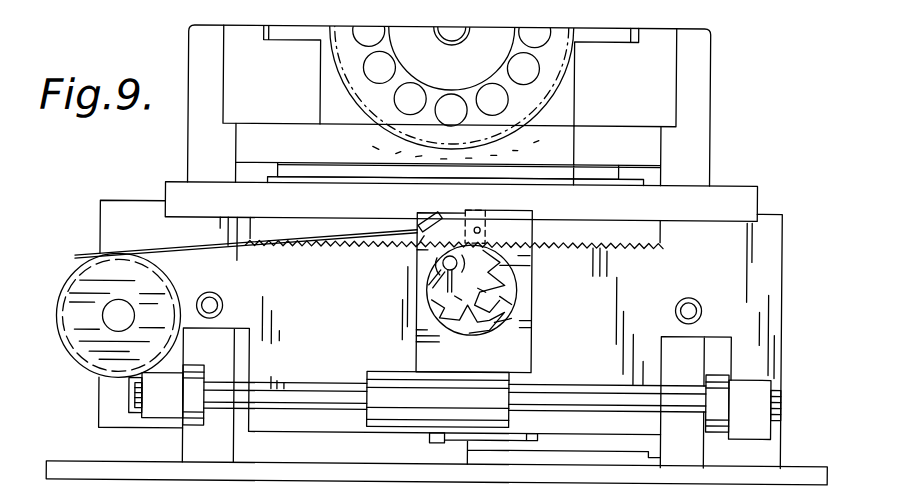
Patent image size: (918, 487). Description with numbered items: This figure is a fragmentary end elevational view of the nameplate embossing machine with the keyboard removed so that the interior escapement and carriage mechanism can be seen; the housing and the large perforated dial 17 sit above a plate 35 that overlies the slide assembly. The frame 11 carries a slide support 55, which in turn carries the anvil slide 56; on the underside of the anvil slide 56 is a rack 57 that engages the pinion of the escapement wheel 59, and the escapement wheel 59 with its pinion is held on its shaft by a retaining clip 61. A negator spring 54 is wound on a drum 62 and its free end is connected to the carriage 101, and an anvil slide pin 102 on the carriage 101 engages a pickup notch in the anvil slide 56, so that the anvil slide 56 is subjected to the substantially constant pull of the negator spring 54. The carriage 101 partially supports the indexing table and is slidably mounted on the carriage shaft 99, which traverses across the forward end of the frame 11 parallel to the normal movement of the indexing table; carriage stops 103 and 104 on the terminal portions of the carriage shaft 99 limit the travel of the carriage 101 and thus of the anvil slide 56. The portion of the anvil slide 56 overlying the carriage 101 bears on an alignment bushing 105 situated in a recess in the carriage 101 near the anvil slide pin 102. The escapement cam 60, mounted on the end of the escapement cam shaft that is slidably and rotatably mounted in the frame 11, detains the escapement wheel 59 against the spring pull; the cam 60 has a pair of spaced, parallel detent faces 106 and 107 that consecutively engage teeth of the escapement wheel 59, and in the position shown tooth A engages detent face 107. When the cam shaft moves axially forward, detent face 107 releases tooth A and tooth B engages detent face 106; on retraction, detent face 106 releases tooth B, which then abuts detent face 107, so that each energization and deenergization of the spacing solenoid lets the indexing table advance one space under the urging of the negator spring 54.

The frame 11 is at (695, 84).
The turret disk 17 is at (512, 118).
The support plate 35 is at (564, 184).
The anvil slide 56 is at (738, 198).
The anvil slide pin 102 is at (515, 206).
The alignment bushing 105 is at (462, 206).
The drum 62 is at (92, 281).
The negator spring 54 is at (246, 248).
The escapement wheel 59 is at (420, 242).
The retaining clip 61 is at (437, 275).
The tooth A is at (482, 290).
The tooth B is at (458, 298).
The detent face 107 is at (522, 322).
The carriage 101 is at (530, 332).
The escapement cam 60 is at (462, 330).
The detent face 106 is at (480, 330).
The carriage shaft 99 is at (272, 380).
The carriage stop 103 is at (200, 418).
The carriage stop 104 is at (720, 430).
The rack 57 is at (619, 247).
The slide support 55 is at (762, 258).